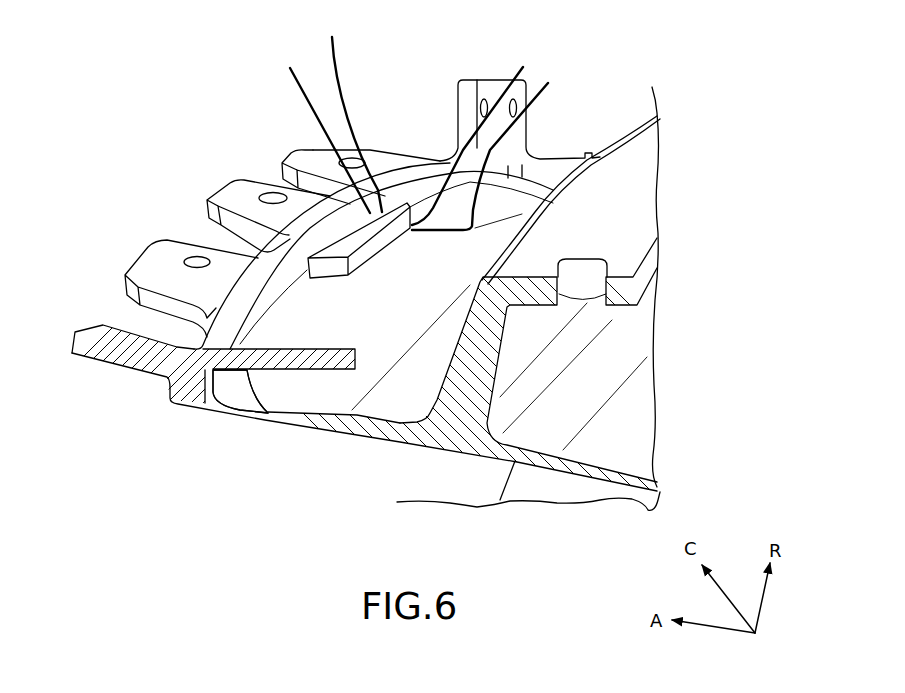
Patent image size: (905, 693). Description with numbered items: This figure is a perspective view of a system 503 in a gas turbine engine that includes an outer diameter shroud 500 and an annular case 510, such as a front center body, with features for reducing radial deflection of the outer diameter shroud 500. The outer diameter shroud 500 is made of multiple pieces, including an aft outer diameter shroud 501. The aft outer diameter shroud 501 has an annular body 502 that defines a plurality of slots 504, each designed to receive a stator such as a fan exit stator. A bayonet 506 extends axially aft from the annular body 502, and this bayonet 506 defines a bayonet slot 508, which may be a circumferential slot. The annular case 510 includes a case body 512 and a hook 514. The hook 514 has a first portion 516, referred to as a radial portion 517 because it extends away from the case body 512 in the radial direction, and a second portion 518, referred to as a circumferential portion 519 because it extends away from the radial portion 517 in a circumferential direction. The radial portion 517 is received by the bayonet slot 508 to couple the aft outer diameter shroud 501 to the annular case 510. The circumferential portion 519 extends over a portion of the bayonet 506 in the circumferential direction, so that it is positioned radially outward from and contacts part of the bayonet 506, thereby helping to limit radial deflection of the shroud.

The outer diameter shroud 500 is at (378, 142).
The aft outer diameter shroud 501 is at (408, 153).
The annular body 502 is at (300, 147).
The system 503 is at (200, 127).
The slots 504 is at (200, 228).
The bayonet 506 is at (297, 335).
The bayonet slot 508 is at (372, 260).
The annular case 510 is at (513, 224).
The case body 512 is at (487, 253).
The hook 514 is at (335, 249).
The first portion 516 is at (476, 132).
The radial portion 517 is at (497, 147).
The second portion 518 is at (321, 130).
The circumferential portion 519 is at (348, 112).